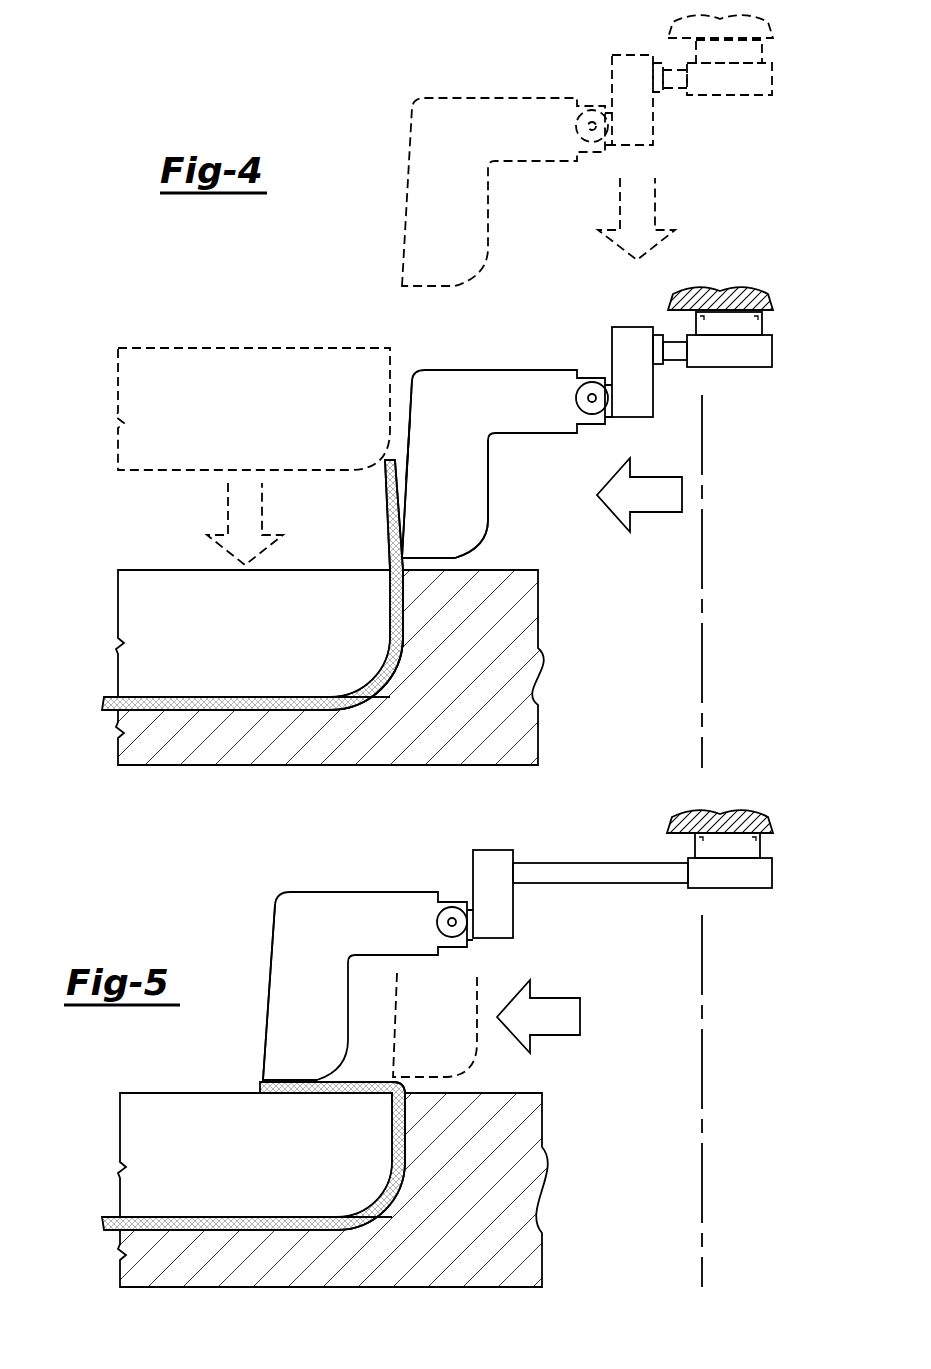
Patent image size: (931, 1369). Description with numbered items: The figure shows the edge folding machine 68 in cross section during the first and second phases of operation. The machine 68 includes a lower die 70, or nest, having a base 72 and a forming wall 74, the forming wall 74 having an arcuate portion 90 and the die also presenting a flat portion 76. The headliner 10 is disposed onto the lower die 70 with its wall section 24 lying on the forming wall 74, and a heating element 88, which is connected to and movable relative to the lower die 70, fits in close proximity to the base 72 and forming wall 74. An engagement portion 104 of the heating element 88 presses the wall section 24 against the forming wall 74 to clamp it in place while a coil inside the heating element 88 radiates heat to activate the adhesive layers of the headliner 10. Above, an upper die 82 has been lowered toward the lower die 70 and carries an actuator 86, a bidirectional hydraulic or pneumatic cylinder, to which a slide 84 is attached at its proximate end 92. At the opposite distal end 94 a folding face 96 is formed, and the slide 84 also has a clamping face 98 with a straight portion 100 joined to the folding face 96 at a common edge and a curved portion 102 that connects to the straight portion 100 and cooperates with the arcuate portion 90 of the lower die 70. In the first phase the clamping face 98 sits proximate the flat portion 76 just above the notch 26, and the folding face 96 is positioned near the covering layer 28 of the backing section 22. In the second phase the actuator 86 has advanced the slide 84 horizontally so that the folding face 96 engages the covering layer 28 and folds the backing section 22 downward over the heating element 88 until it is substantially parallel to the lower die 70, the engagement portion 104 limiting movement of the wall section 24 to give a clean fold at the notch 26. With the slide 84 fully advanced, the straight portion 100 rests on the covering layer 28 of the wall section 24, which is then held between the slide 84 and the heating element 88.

In FIG. 4, the headliner 10 is at (103, 707).
In FIG. 4, the backing section 22 is at (387, 492).
In FIG. 5, the backing section 22 is at (265, 1094).
In FIG. 4, the wall section 24 is at (388, 638).
In FIG. 5, the wall section 24 is at (390, 1162).
In FIG. 4, the notch 26 is at (388, 572).
In FIG. 5, the notch 26 is at (390, 1094).
In FIG. 4, the covering layer 28 is at (403, 480).
In FIG. 5, the covering layer 28 is at (368, 1082).
In FIG. 4, the machine 68 is at (414, 391).
In FIG. 5, the machine 68 is at (425, 914).
In FIG. 4, the lower die 70 is at (513, 717).
In FIG. 5, the lower die 70 is at (532, 1213).
In FIG. 4, the base 72 is at (253, 712).
In FIG. 4, the forming wall 74 is at (408, 615).
In FIG. 4, the flat portion 76 is at (516, 571).
In FIG. 4, the upper die 82 is at (730, 292).
In FIG. 5, the upper die 82 is at (728, 808).
In FIG. 4, the slide 84 is at (457, 410).
In FIG. 5, the slide 84 is at (345, 939).
In FIG. 4, the actuator 86 is at (730, 368).
In FIG. 5, the actuator 86 is at (724, 888).
In FIG. 4, the heating element 88 is at (264, 640).
In FIG. 5, the heating element 88 is at (177, 1161).
In FIG. 4, the arcuate portion 90 is at (412, 693).
In FIG. 4, the proximate end 92 is at (591, 393).
In FIG. 4, the distal end 94 is at (410, 450).
In FIG. 4, the folding face 96 is at (398, 438).
In FIG. 5, the folding face 96 is at (272, 983).
In FIG. 4, the clamping face 98 is at (485, 530).
In FIG. 4, the straight portion 100 is at (436, 558).
In FIG. 5, the straight portion 100 is at (300, 1080).
In FIG. 4, the curved portion 102 is at (470, 530).
In FIG. 4, the engagement portion 104 is at (388, 645).
In FIG. 5, the engagement portion 104 is at (390, 1168).